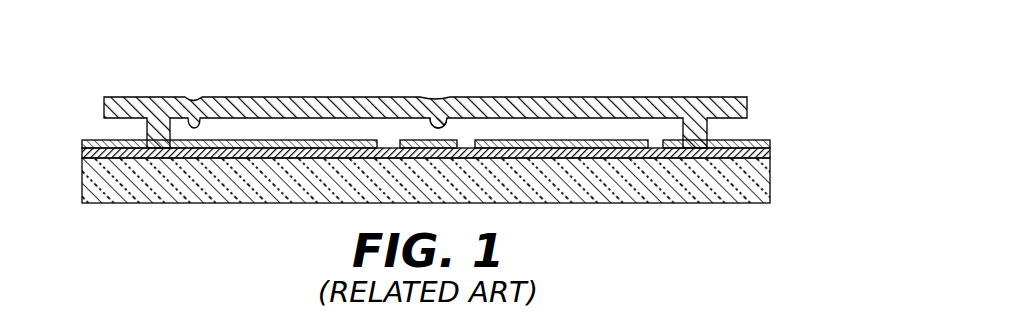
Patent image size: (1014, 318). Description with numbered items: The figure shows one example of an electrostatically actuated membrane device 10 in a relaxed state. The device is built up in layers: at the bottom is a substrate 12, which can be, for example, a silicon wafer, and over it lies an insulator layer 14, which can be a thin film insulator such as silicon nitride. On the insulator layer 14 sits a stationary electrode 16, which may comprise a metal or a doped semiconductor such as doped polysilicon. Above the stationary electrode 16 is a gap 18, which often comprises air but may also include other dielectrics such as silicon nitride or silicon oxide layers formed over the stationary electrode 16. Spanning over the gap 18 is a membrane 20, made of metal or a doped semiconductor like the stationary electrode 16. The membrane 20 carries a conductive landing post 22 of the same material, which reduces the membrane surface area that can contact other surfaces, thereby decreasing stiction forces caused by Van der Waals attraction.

The electrostatically actuated membrane device 10 is at (641, 39).
The substrate 12 is at (82, 180).
The insulator layer 14 is at (82, 150).
The stationary electrode 16 is at (207, 139).
The gap 18 is at (582, 134).
The membrane 20 is at (202, 99).
The conductive landing post 22 is at (446, 126).